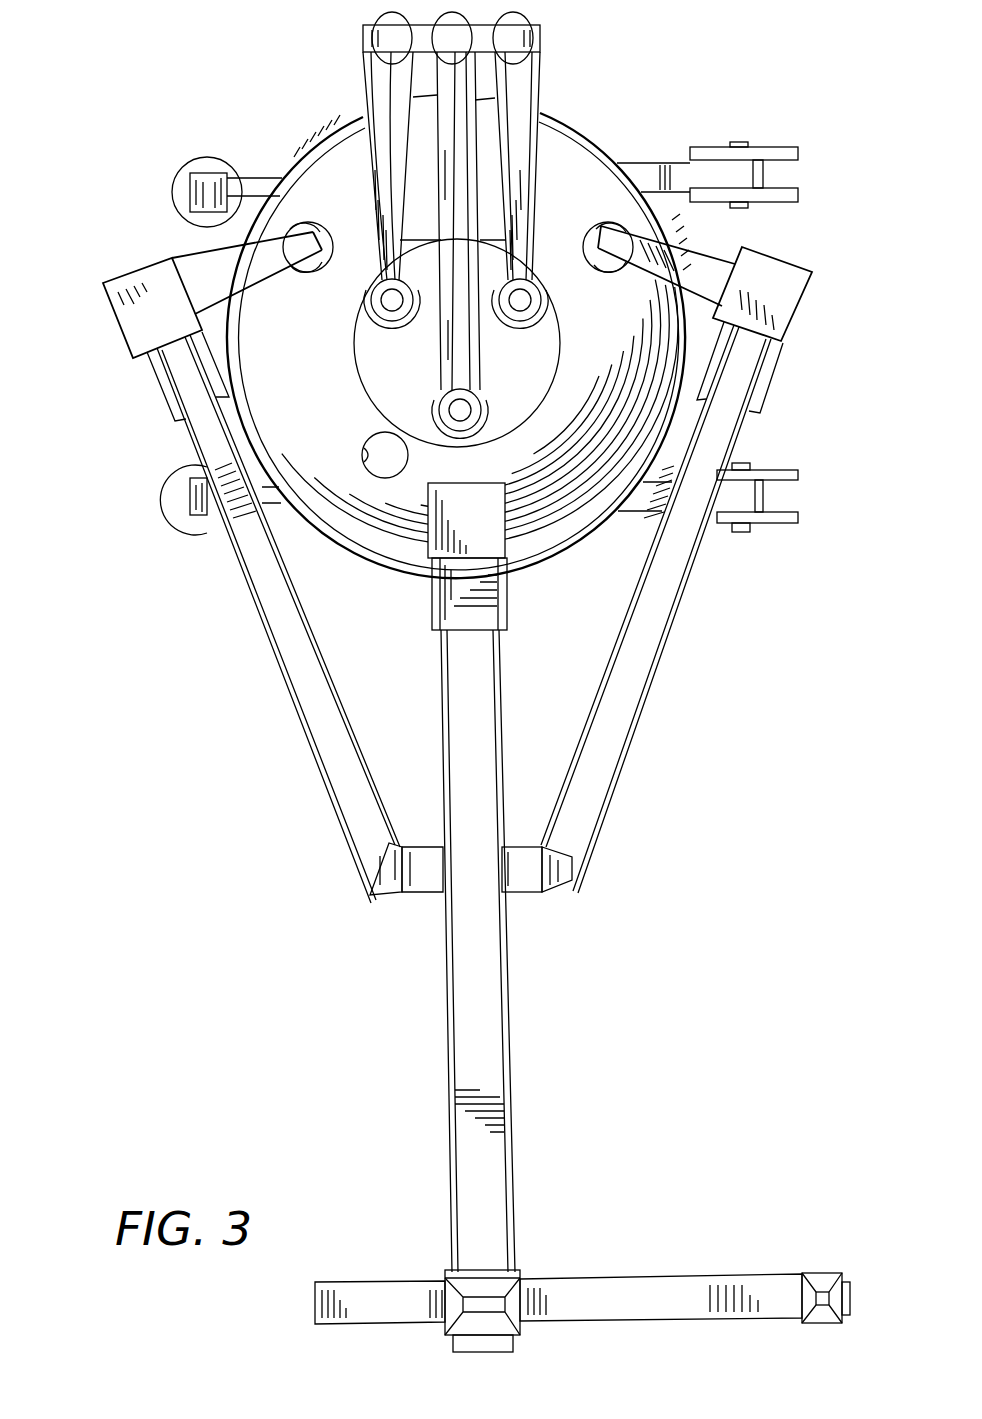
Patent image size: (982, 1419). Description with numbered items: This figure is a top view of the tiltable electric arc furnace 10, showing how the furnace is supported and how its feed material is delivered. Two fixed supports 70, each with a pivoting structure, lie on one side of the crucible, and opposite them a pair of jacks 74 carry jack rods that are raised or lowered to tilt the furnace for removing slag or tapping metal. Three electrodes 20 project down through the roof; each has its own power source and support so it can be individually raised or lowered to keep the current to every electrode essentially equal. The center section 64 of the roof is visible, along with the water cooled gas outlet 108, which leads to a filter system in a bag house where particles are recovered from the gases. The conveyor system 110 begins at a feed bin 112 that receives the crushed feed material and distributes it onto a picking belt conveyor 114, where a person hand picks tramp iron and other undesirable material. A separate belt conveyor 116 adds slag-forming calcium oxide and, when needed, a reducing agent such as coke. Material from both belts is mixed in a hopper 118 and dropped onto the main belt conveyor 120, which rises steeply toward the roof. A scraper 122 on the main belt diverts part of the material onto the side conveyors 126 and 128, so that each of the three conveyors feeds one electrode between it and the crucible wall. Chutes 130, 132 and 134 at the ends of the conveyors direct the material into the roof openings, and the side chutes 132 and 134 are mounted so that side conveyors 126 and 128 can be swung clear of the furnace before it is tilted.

The electric arc furnace 10 is at (400, 518).
The electrodes 20 is at (537, 133).
The center section 64 is at (362, 356).
The fixed supports 70 is at (785, 148).
The jacks 74 is at (183, 185).
The water cooled gas outlet 108 is at (366, 446).
The conveyor system 110 is at (393, 980).
The feed bin 112 is at (820, 1285).
The picking belt conveyor 114 is at (658, 1295).
The belt conveyor 116 is at (372, 1292).
The hopper 118 is at (478, 1322).
The main belt conveyor 120 is at (468, 1040).
The scraper 122 is at (490, 880).
The side conveyor 126 is at (655, 650).
The side conveyor 128 is at (290, 692).
The chute 130 is at (498, 514).
The side chute 132 is at (785, 306).
The side chute 134 is at (106, 303).